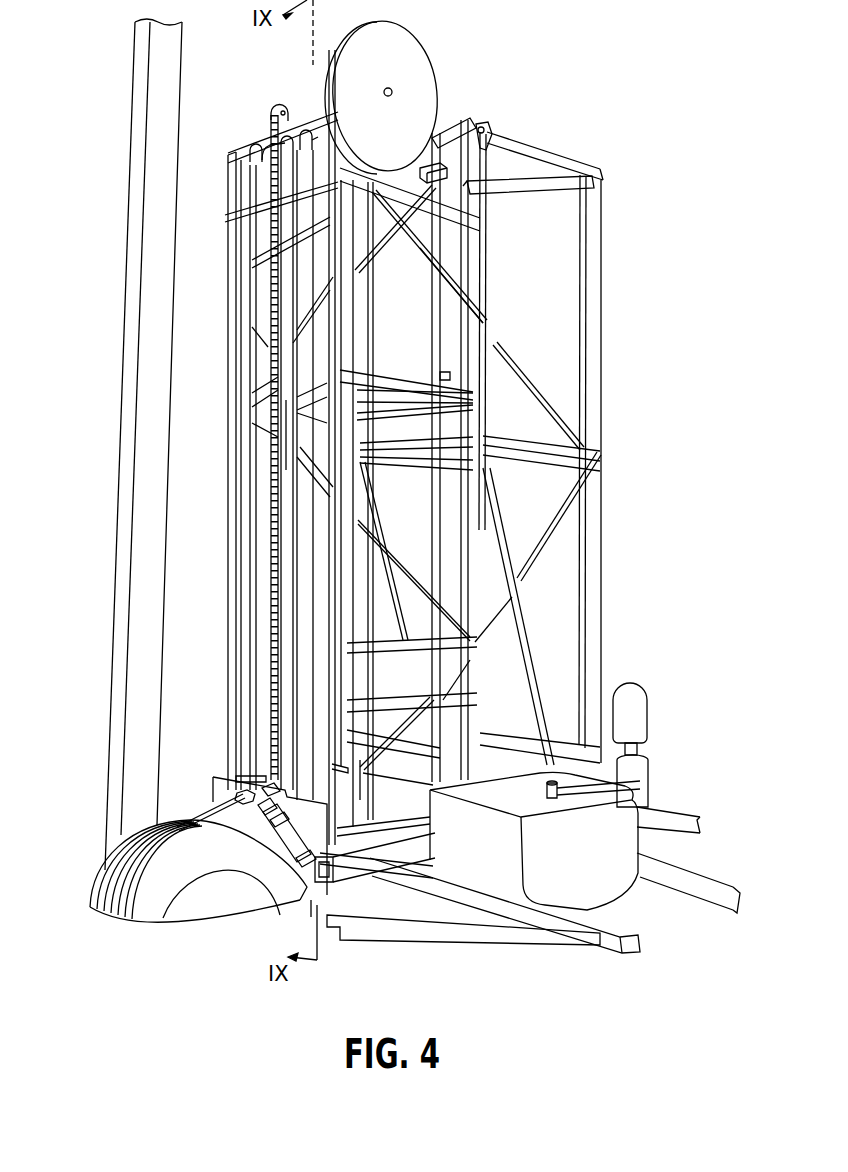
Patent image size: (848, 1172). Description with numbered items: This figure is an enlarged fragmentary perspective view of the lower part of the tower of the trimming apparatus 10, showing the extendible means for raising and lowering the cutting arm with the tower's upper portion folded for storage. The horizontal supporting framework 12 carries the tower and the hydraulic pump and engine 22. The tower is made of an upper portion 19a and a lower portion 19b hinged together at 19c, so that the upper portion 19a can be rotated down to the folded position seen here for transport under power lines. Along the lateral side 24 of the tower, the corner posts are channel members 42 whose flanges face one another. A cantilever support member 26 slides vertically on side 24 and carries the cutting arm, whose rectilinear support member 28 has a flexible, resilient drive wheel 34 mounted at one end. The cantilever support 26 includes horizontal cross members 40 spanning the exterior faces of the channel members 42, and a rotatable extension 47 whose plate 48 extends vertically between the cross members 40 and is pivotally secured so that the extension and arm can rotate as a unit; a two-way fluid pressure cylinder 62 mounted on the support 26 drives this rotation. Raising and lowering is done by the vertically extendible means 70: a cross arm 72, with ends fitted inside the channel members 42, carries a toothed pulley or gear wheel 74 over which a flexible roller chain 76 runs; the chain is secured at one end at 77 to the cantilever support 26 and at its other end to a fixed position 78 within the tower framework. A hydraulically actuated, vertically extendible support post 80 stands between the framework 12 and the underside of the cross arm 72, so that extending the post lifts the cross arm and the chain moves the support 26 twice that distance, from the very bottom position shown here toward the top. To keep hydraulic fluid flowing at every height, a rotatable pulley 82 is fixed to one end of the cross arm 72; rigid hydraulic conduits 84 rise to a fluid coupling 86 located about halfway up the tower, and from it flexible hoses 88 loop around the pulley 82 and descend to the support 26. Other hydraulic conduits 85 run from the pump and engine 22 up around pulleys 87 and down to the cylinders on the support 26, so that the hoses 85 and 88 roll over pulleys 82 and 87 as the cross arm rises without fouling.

The trimming apparatus 10 is at (618, 127).
The horizontal supporting framework 12 is at (438, 933).
The upper portion of tower 19a is at (600, 302).
The lower portion of tower 19b is at (460, 115).
The hinge 19c is at (484, 127).
The hydraulic pump and engine 22 is at (539, 796).
The lateral side of tower 24 is at (233, 170).
The cantilever support member 26 is at (338, 840).
The rectilinear support member 28 is at (128, 340).
The drive wheel 34 is at (150, 905).
The cross members 40 is at (300, 920).
The channel members 42 is at (240, 516).
The rotatable extension 47 is at (247, 835).
The plate 48 is at (236, 798).
The two-way fluid pressure cylinder 62 is at (284, 866).
The vertically extendible means 70 is at (252, 292).
The cross arm 72 is at (266, 142).
The toothed pulley or gear wheel 74 is at (283, 106).
The roller chain 76 is at (282, 128).
The chain securing point 77 is at (258, 775).
The fixed position 78 is at (262, 212).
The vertically extendible support post 80 is at (286, 447).
The rotatable pulley 82 is at (400, 40).
The rigid hydraulic conduits 84 is at (429, 295).
The hydraulic conduits 85 is at (252, 338).
The fluid coupling 86 is at (448, 165).
The pulleys 87 is at (258, 152).
The flexible hydraulic conduits or hoses 88 is at (333, 312).